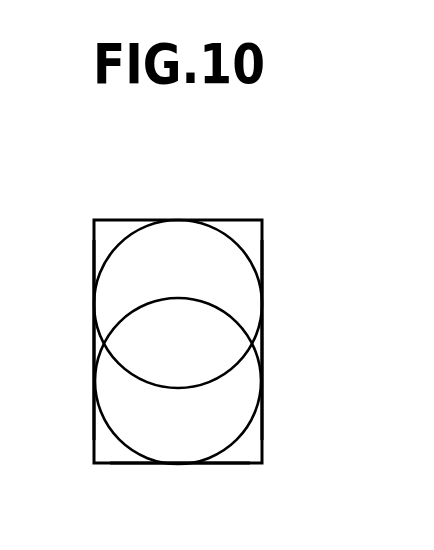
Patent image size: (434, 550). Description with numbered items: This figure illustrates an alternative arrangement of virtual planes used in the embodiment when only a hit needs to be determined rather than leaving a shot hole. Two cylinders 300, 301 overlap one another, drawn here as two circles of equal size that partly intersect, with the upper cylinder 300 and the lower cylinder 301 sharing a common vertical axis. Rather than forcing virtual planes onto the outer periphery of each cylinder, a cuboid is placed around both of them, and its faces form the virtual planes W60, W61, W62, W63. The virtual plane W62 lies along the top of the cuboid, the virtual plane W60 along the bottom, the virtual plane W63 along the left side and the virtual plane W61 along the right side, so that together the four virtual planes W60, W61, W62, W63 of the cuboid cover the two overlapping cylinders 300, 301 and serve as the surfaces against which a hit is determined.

The cylinder 300 is at (243, 253).
The cylinder 301 is at (238, 425).
The virtual plane W60 is at (140, 465).
The virtual plane W61 is at (262, 345).
The virtual plane W62 is at (155, 220).
The virtual plane W63 is at (93, 330).